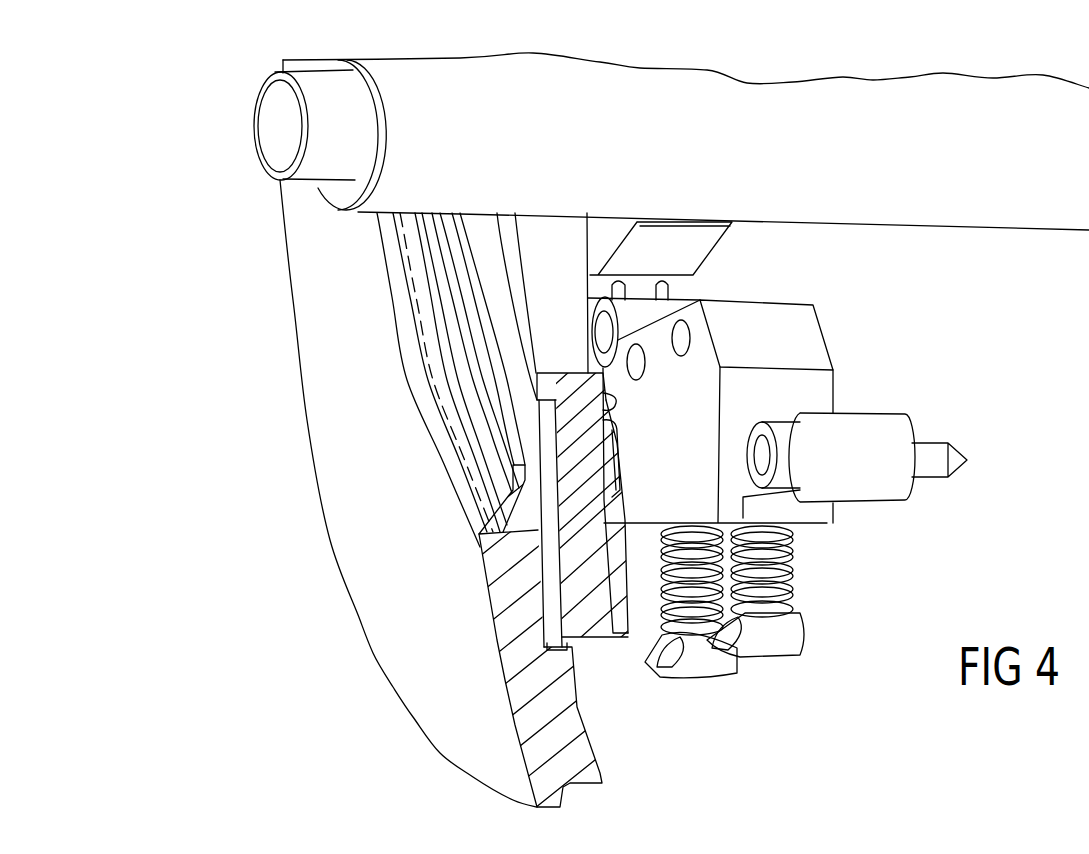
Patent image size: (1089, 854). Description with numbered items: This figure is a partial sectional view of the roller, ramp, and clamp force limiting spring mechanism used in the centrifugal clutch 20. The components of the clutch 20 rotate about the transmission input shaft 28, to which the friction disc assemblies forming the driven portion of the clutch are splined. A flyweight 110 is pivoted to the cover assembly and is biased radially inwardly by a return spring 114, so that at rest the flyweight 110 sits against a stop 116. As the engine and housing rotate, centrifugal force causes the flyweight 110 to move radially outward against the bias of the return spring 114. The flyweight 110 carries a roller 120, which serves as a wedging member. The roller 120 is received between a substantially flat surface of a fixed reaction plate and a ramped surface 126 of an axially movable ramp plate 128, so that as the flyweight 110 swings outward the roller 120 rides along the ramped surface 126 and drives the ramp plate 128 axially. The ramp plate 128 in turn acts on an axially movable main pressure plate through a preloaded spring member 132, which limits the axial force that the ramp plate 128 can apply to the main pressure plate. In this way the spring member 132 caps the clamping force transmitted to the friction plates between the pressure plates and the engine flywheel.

The clutch 20 is at (347, 658).
The transmission input shaft 28 is at (267, 107).
The flyweights 110 is at (681, 447).
The return springs 114 is at (775, 588).
The stops 116 is at (607, 300).
The rollers 120 is at (613, 473).
The ramped surface 126 is at (615, 398).
The ramp plate 128 is at (598, 640).
The preloaded spring member 132 is at (548, 622).